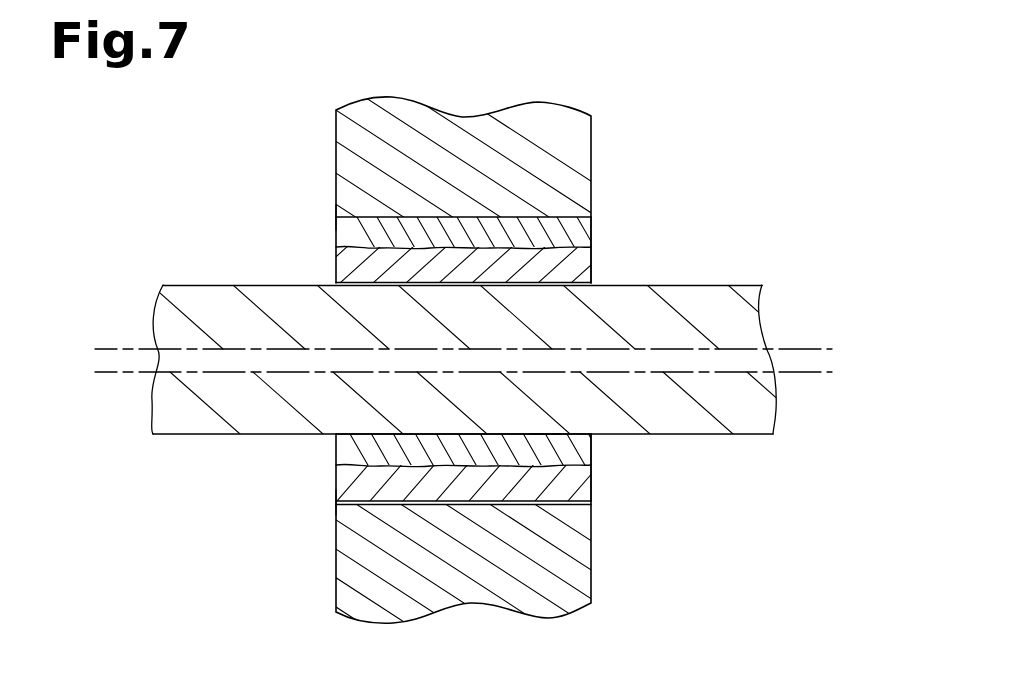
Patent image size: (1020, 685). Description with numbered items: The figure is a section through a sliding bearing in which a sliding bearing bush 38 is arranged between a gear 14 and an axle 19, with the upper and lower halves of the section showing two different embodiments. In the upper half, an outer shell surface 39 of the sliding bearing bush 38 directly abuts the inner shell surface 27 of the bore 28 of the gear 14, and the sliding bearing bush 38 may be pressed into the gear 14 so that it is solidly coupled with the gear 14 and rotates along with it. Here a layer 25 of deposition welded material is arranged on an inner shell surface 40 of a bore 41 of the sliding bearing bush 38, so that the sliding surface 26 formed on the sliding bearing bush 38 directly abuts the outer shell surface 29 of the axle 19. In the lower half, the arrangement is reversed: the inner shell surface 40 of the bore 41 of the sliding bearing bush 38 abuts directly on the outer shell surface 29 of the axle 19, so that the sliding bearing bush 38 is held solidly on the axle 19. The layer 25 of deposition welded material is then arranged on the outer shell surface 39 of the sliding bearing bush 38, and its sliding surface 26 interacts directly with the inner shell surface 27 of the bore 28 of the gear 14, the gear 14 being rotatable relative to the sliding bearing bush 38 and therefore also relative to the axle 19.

The gear 14 is at (545, 122).
The axle 19 is at (735, 310).
The layer 25 is at (407, 488).
The sliding surface 26 is at (532, 288).
The inner shell surface 27 is at (402, 217).
The bore 28 is at (326, 214).
The outer shell surface 29 is at (195, 284).
The sliding bearing bush 38 is at (618, 237).
The outer shell surface 39 is at (548, 212).
The inner shell surface 40 is at (541, 433).
The bore 41 is at (606, 443).